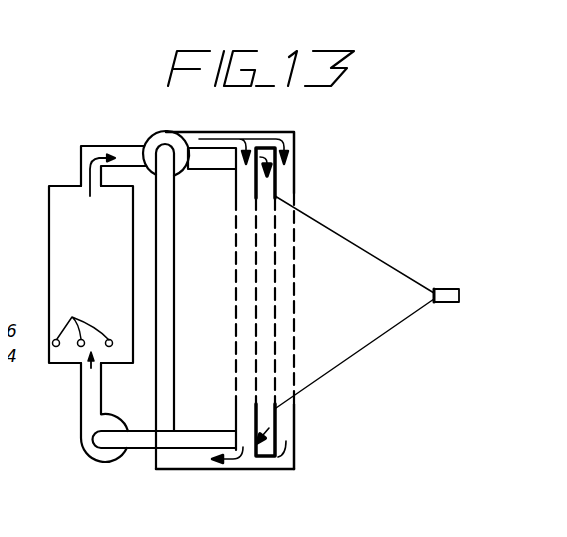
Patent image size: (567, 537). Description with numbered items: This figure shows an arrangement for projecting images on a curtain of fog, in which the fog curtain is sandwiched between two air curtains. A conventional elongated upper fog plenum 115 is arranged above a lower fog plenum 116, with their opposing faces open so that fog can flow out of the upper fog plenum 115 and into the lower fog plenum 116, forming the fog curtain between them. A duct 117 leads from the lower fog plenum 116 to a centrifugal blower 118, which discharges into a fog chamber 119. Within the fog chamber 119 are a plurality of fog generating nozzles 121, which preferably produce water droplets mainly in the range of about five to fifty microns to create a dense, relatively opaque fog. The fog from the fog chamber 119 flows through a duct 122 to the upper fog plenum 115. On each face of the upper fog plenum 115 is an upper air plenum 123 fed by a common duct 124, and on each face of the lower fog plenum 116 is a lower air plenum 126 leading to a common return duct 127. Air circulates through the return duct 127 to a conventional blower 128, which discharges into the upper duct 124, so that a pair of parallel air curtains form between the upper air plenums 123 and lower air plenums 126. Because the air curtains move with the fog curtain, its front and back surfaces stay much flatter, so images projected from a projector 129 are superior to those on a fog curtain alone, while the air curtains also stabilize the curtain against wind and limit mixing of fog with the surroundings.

The upper fog plenum 115 is at (276, 179).
The lower fog plenum 116 is at (272, 421).
The duct 117 is at (144, 448).
The centrifugal blower 118 is at (96, 461).
The fog chamber 119 is at (48, 203).
The fog generating nozzles 121 is at (83, 334).
The duct 122 is at (125, 145).
The upper air plenum 123 is at (295, 183).
The common duct 124 is at (222, 131).
The lower air plenum 126 is at (236, 413).
The common return duct 127 is at (221, 469).
The blower 128 is at (177, 177).
The projector 129 is at (437, 302).